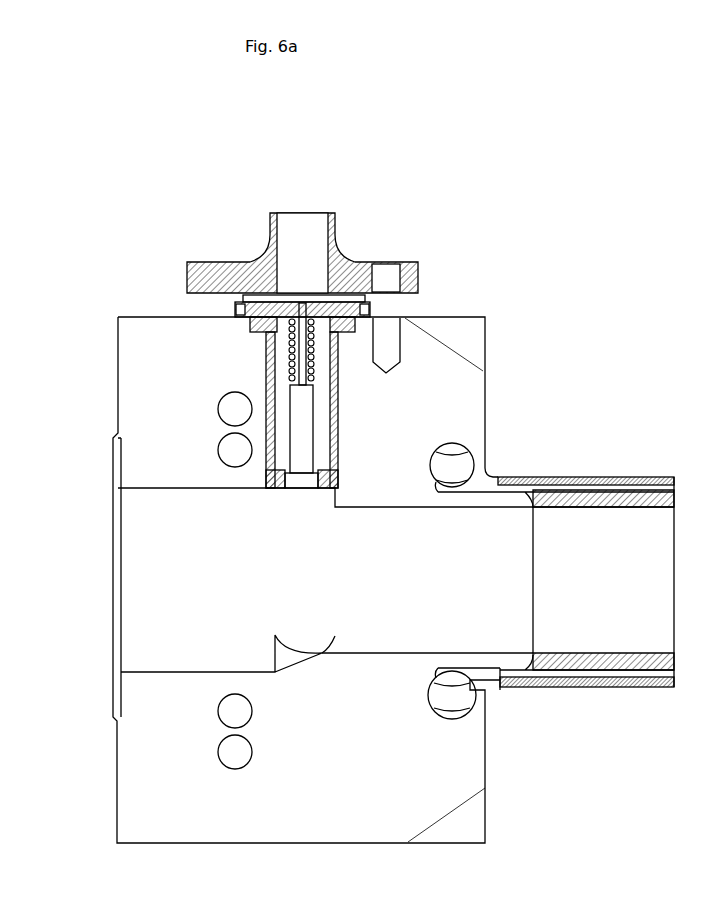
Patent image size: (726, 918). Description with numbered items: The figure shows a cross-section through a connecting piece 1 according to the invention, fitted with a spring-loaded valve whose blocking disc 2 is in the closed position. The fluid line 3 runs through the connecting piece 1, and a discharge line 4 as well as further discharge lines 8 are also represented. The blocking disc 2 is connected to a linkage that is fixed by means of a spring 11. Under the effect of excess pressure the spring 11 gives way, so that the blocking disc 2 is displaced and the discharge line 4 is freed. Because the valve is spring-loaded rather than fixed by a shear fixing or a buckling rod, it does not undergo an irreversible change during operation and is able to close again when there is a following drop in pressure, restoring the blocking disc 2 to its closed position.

The connecting piece 1 is at (468, 428).
The blocking disc 2 is at (325, 470).
The fluid line 3 is at (482, 630).
The discharge line 4 is at (287, 235).
The discharge lines 8 is at (228, 456).
The spring 11 is at (308, 355).